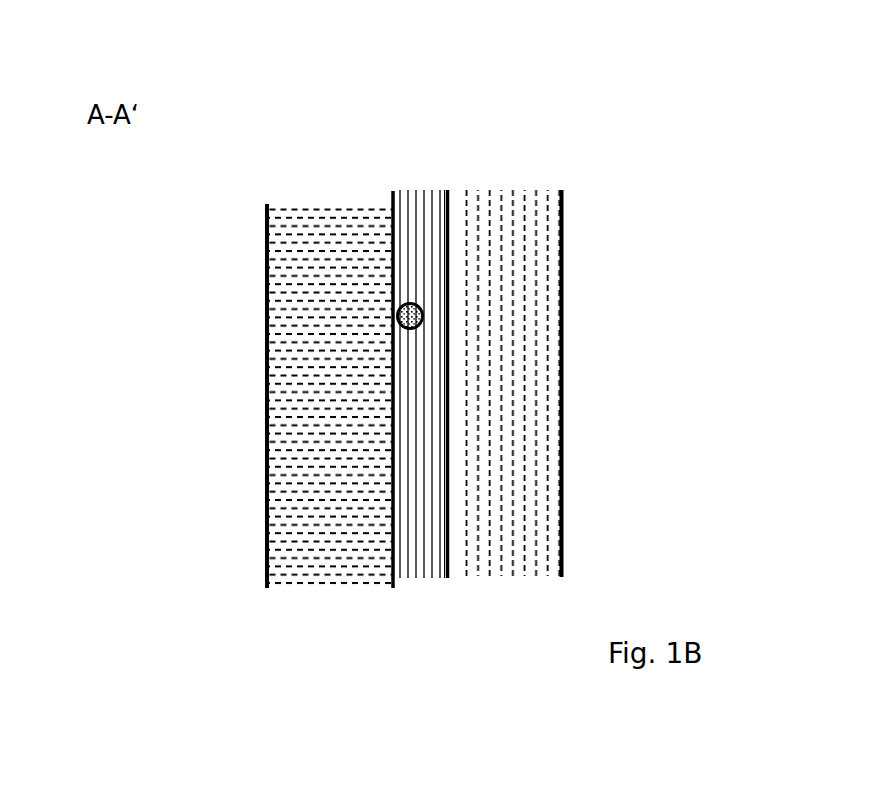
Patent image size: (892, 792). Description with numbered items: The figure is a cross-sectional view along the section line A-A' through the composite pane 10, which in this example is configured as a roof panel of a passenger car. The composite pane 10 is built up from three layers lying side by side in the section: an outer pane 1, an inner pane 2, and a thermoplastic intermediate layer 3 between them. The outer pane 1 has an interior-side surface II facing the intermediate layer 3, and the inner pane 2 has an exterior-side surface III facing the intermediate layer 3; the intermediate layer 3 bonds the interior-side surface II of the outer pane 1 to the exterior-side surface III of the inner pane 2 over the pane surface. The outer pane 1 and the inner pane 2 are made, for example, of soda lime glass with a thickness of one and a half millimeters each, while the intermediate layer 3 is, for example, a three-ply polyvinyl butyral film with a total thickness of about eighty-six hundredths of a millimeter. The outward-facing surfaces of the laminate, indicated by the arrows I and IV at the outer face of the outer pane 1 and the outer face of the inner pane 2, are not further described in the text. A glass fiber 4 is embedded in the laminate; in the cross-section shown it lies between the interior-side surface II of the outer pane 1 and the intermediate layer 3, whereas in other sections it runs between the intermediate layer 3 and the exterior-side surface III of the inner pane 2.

The composite pane 10 is at (604, 174).
The outer pane 1 is at (287, 301).
The inner pane 2 is at (530, 376).
The thermoplastic intermediate layer 3 is at (422, 375).
The glass fiber 4 is at (418, 306).
The outer surface of first layer I is at (262, 480).
The interior-side surface II is at (410, 580).
The exterior-side surface III is at (432, 549).
The outer surface of second layer IV is at (568, 512).